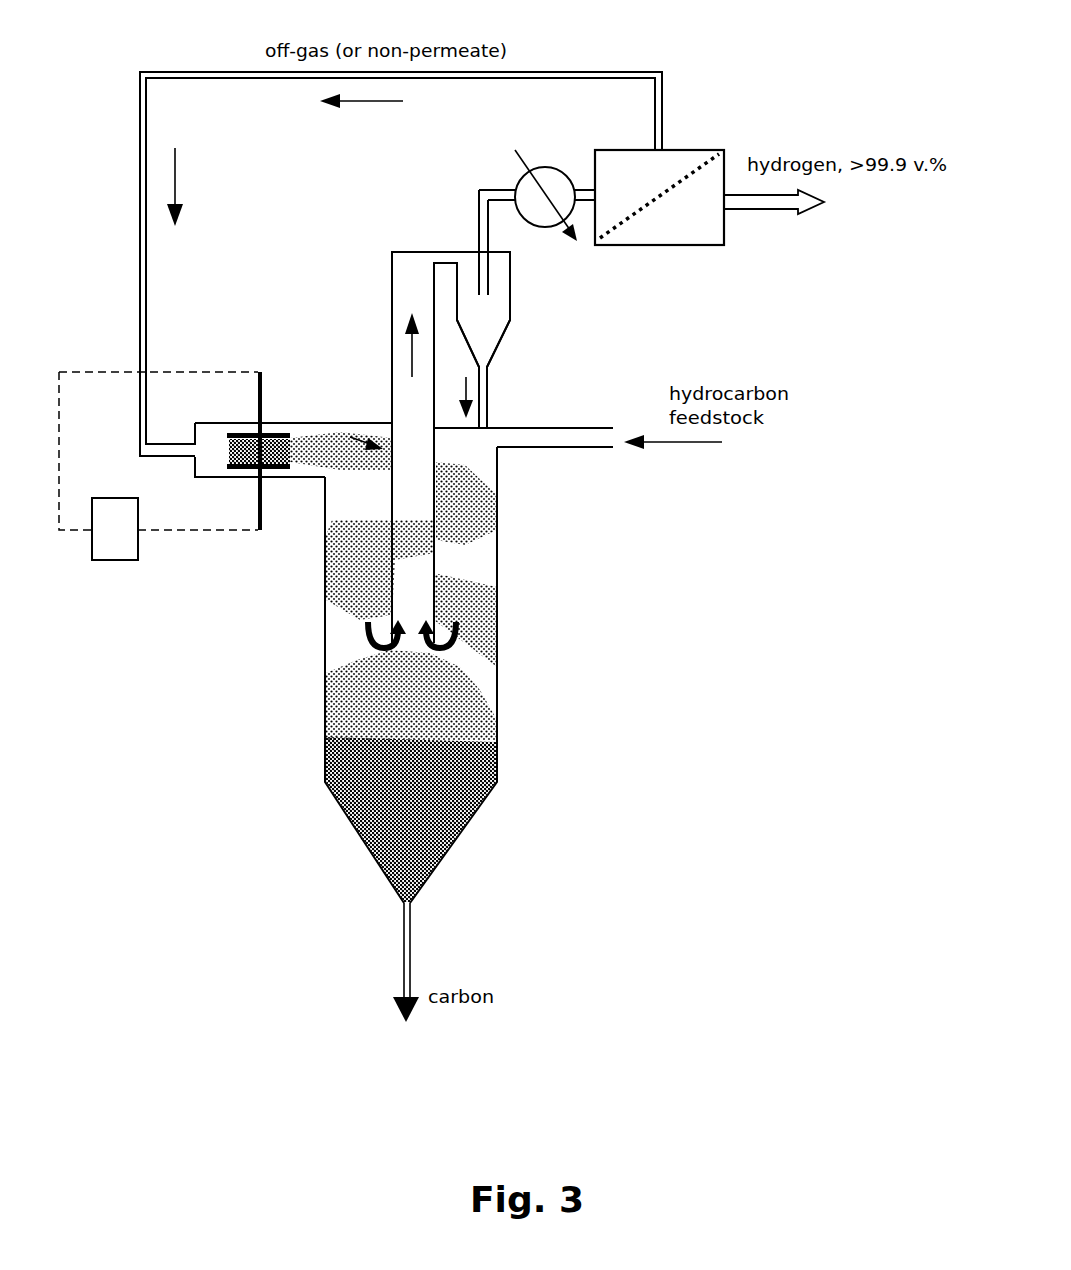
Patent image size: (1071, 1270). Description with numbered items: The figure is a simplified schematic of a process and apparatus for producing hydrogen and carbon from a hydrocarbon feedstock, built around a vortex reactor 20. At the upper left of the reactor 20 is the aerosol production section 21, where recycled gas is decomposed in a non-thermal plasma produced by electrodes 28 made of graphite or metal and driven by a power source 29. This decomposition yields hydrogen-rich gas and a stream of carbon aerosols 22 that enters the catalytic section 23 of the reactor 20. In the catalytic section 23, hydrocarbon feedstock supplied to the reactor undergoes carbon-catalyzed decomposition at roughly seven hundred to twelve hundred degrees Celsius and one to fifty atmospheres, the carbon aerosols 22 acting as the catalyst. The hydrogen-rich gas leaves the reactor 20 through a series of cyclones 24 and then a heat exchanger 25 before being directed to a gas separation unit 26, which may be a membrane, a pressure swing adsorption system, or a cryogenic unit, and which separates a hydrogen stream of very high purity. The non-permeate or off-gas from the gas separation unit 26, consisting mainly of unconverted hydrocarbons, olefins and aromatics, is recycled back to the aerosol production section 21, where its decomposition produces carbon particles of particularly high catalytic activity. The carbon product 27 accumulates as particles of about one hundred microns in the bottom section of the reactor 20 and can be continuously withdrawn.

The reactor 20 is at (618, 593).
The aerosol production section 21 is at (204, 435).
The stream of carbon aerosols 22 is at (313, 440).
The catalytic section 23 is at (467, 518).
The cyclones 24 is at (515, 307).
The heat exchanger 25 is at (560, 167).
The gas separation unit 26 is at (690, 148).
The carbon product 27 is at (480, 768).
The electrodes 28 is at (250, 468).
The power source 29 is at (123, 545).